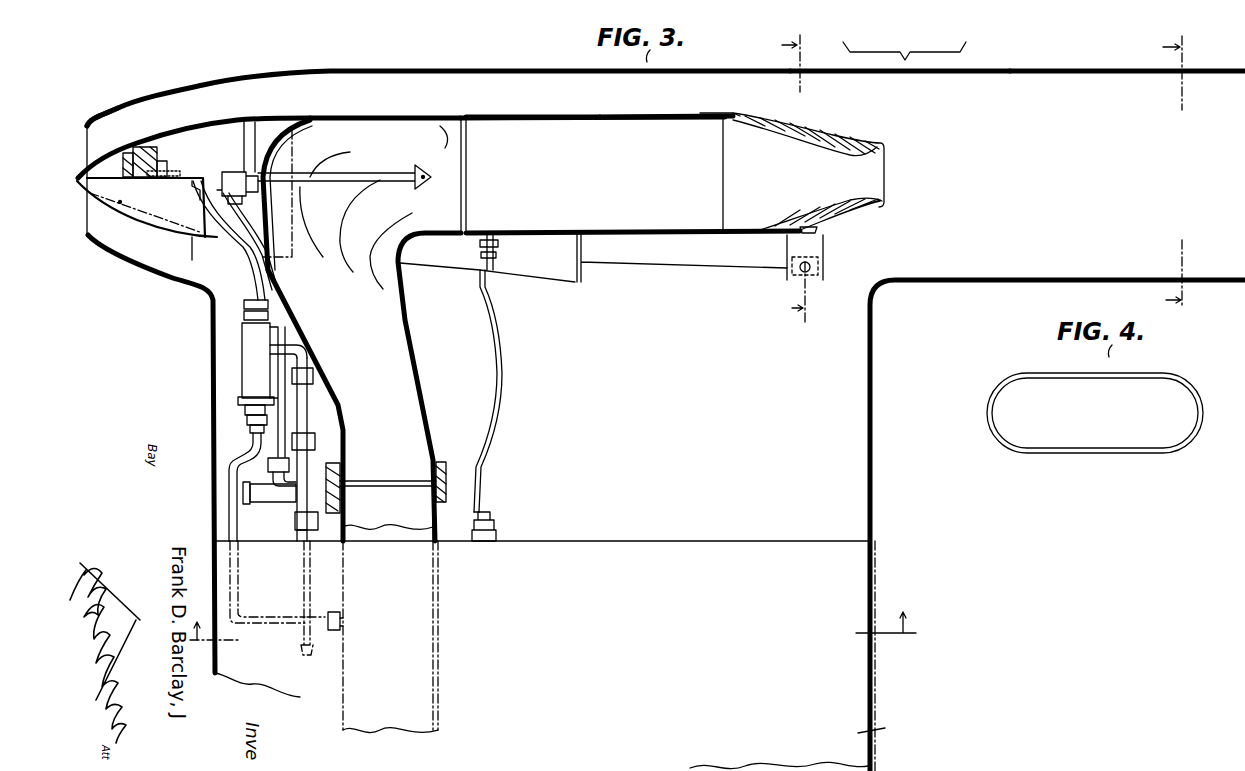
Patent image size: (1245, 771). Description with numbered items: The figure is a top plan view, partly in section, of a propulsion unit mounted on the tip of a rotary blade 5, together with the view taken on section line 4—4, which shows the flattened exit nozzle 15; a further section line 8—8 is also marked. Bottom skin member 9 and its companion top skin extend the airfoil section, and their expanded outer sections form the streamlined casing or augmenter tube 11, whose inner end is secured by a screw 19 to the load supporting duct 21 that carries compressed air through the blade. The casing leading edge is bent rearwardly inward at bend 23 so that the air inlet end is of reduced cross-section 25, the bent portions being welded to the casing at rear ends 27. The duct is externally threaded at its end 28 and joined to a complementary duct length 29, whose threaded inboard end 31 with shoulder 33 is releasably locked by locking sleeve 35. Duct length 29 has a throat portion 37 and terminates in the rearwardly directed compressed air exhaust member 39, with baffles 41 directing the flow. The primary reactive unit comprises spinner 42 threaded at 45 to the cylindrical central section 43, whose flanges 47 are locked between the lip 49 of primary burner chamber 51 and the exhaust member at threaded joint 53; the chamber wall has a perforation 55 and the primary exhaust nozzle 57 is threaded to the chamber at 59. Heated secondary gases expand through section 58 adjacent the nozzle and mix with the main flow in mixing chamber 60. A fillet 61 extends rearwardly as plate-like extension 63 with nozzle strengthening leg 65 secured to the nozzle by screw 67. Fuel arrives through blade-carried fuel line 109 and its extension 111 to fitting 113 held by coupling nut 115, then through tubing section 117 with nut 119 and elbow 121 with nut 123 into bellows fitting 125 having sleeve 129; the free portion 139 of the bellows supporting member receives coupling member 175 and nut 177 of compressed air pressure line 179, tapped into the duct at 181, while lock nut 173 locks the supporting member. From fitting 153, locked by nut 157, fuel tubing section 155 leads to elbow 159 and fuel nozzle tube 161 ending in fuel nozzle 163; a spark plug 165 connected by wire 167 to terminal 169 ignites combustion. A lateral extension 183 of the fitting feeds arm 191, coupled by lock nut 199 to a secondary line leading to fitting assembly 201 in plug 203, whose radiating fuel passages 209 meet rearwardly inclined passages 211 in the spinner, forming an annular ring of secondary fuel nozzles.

In FIG. 3, the section line 4— 4 is at (1163, 173).
In FIG. 3, the blade 5 is at (215, 645).
In FIG. 4, the blade 5 is at (886, 672).
In FIG. 3, the section line 8— 8 is at (785, 178).
In FIG. 4, the bottom skin member 9 is at (858, 478).
In FIG. 3, the casing or augmenter tube 11 is at (904, 41).
In FIG. 4, the exit nozzle 15 is at (1110, 450).
In FIG. 3, the screw 19 is at (1234, 295).
In FIG. 3, the load supporting duct 21 is at (433, 698).
In FIG. 3, the rearwardly bent leading edge 23 is at (98, 114).
In FIG. 3, the reduced cross-section inlet end 25 is at (103, 143).
In FIG. 3, the rear ends of bent portions 27 is at (291, 79).
In FIG. 3, the externally threaded duct end 28 is at (541, 525).
In FIG. 3, the duct length 29 is at (436, 432).
In FIG. 3, the externally threaded inboard end 31 is at (436, 478).
In FIG. 3, the shoulder 33 is at (438, 461).
In FIG. 3, the locking sleeve 35 is at (448, 484).
In FIG. 3, the throat portion 37 is at (408, 313).
In FIG. 3, the compressed air exhaust member 39 is at (306, 127).
In FIG. 3, the baffles 41 is at (336, 160).
In FIG. 3, the spinner 42 is at (113, 220).
In FIG. 3, the cylindrical central section 43 is at (308, 130).
In FIG. 3, the threaded spinner attachment 45 is at (253, 121).
In FIG. 3, the flanges 47 is at (439, 130).
In FIG. 3, the lip 49 is at (433, 116).
In FIG. 3, the primary burner chamber 51 is at (647, 163).
In FIG. 3, the threaded joint 53 is at (445, 149).
In FIG. 3, the perforation 55 is at (512, 115).
In FIG. 3, the primary exhaust nozzle 57 is at (797, 113).
In FIG. 3, the expansion section 58 is at (952, 83).
In FIG. 3, the nozzle threaded connection 59 is at (750, 114).
In FIG. 3, the mixing chamber 60 is at (1022, 98).
In FIG. 3, the fillet 61 is at (200, 258).
In FIG. 3, the plate-like extension 63 is at (657, 283).
In FIG. 3, the nozzle strengthening leg 65 is at (812, 252).
In FIG. 3, the screw 67 is at (818, 232).
In FIG. 3, the fuel line 109 is at (332, 634).
In FIG. 3, the fuel line extension 111 is at (300, 538).
In FIG. 3, the fitting 113 is at (300, 498).
In FIG. 3, the coupling nut 115 is at (296, 522).
In FIG. 3, the tubing section 117 is at (308, 415).
In FIG. 3, the nut 119 is at (316, 440).
In FIG. 3, the elbow 121 is at (312, 358).
In FIG. 3, the nut 123 is at (314, 380).
In FIG. 3, the bellows fitting 125 is at (243, 375).
In FIG. 3, the sleeve 129 is at (243, 340).
In FIG. 3, the free portion of bellows supporting member 139 is at (248, 409).
In FIG. 3, the fitting 153 is at (270, 317).
In FIG. 3, the fuel tubing section 155 is at (265, 280).
In FIG. 3, the nut 157 is at (270, 303).
In FIG. 3, the elbow 159 is at (236, 178).
In FIG. 3, the fuel nozzle tube 161 is at (268, 184).
In FIG. 3, the fuel nozzle 163 is at (425, 186).
In FIG. 3, the spark plug 165 is at (497, 250).
In FIG. 3, the wire 167 is at (498, 377).
In FIG. 3, the terminal 169 is at (496, 530).
In FIG. 3, the lock nut 173 is at (243, 399).
In FIG. 3, the coupling member 175 is at (248, 420).
In FIG. 3, the nut 177 is at (250, 430).
In FIG. 3, the compressed air pressure line 179 is at (228, 508).
In FIG. 3, the tap 181 is at (330, 676).
In FIG. 3, the lateral extension 183 is at (243, 494).
In FIG. 3, the arm 191 is at (274, 476).
In FIG. 3, the lock nut 199 is at (268, 462).
In FIG. 3, the fitting and lock nut assembly 201 is at (203, 161).
In FIG. 3, the plug 203 is at (172, 135).
In FIG. 3, the radiating fuel passages 209 is at (150, 142).
In FIG. 3, the rearwardly inclined fuel passages 211 is at (128, 152).